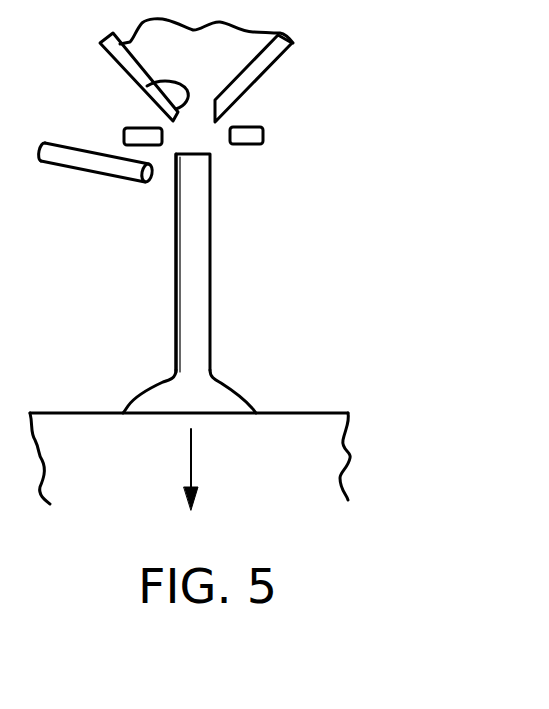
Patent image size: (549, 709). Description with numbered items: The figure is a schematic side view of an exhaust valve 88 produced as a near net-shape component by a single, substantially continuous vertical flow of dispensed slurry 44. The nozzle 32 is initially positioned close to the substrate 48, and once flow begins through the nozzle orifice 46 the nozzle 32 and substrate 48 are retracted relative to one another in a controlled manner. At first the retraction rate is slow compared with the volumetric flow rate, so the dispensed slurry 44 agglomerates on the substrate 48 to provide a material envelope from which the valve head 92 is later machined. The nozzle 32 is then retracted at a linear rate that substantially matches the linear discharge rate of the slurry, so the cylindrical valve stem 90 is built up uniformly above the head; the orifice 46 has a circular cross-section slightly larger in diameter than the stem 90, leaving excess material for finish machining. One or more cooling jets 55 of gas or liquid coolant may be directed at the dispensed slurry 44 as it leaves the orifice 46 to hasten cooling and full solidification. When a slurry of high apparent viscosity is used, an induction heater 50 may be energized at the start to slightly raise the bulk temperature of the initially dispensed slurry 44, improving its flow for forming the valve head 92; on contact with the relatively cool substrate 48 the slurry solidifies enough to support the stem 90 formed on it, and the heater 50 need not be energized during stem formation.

The nozzle 32 is at (265, 75).
The dispensed slurry 44 is at (198, 183).
The nozzle orifice 46 is at (143, 85).
The substrate 48 is at (297, 412).
The induction heater 50 is at (263, 134).
The cooling jet 55 is at (96, 152).
The exhaust valve 88 is at (199, 283).
The valve stem 90 is at (176, 259).
The valve head 92 is at (236, 392).